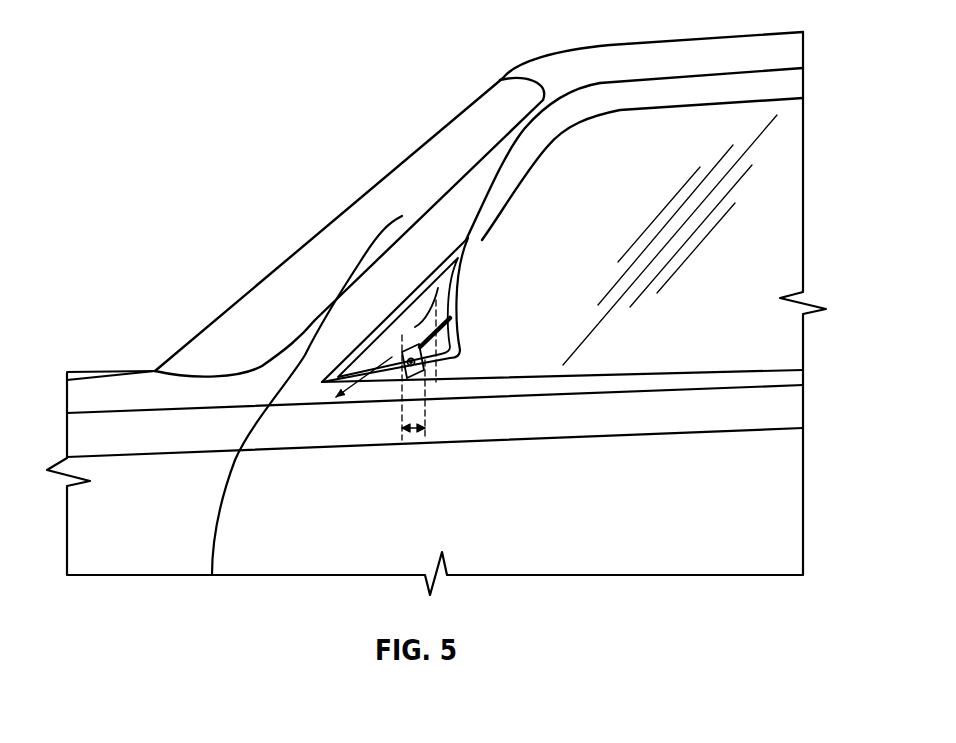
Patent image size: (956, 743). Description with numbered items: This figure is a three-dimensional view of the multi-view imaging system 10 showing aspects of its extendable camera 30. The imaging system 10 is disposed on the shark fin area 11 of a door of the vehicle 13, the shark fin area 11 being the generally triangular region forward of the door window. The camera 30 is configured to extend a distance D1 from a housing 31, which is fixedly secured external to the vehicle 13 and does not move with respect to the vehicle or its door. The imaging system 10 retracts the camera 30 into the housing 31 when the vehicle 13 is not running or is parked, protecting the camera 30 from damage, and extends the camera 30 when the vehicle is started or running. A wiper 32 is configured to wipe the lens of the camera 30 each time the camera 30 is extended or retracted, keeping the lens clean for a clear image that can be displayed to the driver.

The multi-view imaging system 10 is at (363, 355).
The shark fin area 11 is at (405, 285).
The vehicle 13 is at (110, 382).
The extendable camera 30 is at (370, 366).
The housing 31 is at (437, 312).
The wiper 32 is at (458, 325).
The distance D1 is at (412, 432).